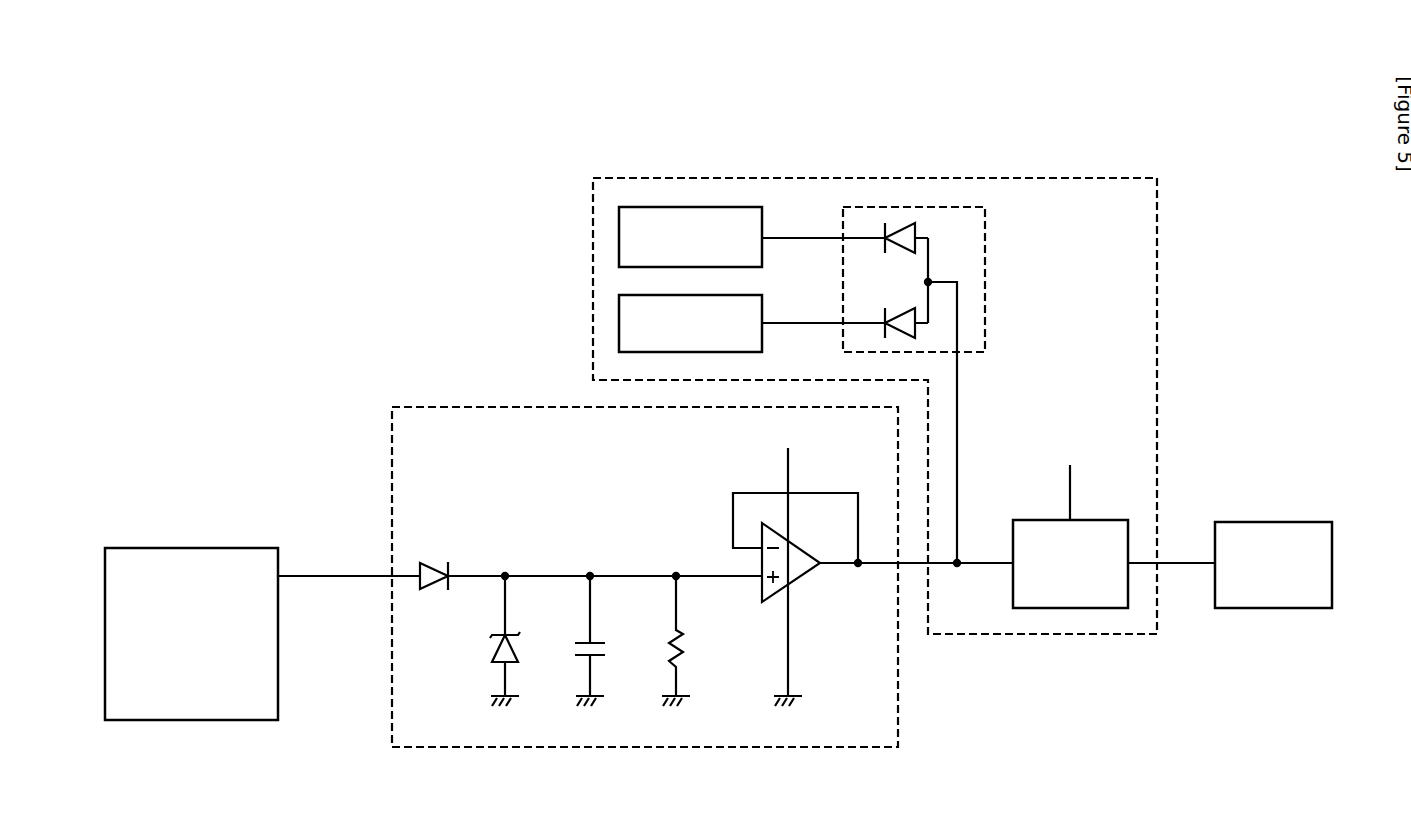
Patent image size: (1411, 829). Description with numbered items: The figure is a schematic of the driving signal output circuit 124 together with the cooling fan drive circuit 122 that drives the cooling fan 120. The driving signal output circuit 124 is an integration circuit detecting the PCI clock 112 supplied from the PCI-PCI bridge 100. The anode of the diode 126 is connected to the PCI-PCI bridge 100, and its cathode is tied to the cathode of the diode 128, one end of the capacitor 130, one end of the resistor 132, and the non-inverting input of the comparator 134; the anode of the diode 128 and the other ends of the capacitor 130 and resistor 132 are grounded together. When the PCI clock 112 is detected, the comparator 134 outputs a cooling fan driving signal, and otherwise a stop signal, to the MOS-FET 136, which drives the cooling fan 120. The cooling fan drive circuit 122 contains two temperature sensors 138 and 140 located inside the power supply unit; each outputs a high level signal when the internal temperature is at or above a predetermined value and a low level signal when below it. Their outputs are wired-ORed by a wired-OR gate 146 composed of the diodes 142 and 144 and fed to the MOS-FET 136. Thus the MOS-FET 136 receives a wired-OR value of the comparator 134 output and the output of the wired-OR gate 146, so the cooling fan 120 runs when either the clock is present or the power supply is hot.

The PCI-PCI bridge 100 is at (199, 548).
The PCI clock 112 is at (328, 580).
The cooling fan 120 is at (1270, 522).
The cooling fan drive circuit 122 is at (885, 178).
The driving signal output circuit 124 is at (664, 750).
The diode 126 is at (438, 562).
The diode 128 is at (492, 648).
The capacitor 130 is at (602, 643).
The resistor 132 is at (688, 648).
The comparator 134 is at (802, 578).
The MOS-FET 136 is at (1030, 520).
The temperature sensor 138 is at (688, 207).
The temperature sensor 140 is at (619, 327).
The diode 142 is at (908, 225).
The diode 144 is at (905, 312).
The wired-OR gate 146 is at (953, 380).